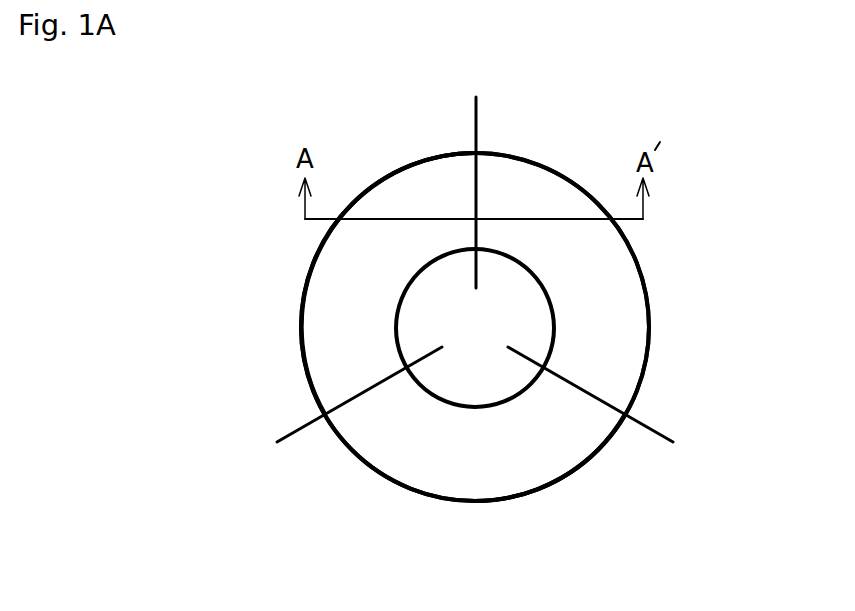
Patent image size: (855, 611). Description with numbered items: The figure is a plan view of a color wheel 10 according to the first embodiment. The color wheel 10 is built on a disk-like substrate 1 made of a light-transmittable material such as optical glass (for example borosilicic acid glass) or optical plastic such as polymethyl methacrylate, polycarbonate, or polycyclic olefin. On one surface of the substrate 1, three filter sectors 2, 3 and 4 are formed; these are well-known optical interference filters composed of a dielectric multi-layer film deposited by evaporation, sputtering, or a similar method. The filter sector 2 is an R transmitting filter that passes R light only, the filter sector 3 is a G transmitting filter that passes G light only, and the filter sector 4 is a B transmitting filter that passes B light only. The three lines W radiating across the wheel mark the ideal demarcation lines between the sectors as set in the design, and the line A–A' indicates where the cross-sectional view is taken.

The disk-like substrate 1 is at (650, 327).
The filter sector 2 is at (633, 290).
The filter sector 3 is at (550, 478).
The filter sector 4 is at (320, 302).
The color wheel 10 is at (478, 510).
The ideal demarcation lines W is at (476, 125).